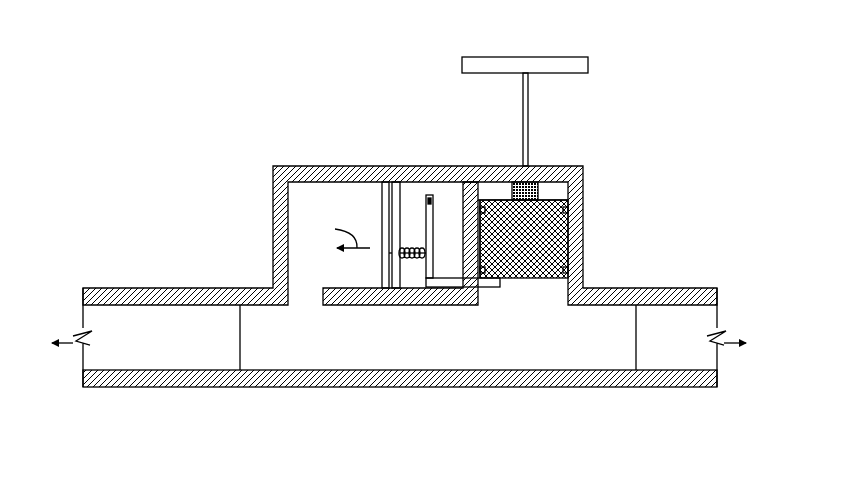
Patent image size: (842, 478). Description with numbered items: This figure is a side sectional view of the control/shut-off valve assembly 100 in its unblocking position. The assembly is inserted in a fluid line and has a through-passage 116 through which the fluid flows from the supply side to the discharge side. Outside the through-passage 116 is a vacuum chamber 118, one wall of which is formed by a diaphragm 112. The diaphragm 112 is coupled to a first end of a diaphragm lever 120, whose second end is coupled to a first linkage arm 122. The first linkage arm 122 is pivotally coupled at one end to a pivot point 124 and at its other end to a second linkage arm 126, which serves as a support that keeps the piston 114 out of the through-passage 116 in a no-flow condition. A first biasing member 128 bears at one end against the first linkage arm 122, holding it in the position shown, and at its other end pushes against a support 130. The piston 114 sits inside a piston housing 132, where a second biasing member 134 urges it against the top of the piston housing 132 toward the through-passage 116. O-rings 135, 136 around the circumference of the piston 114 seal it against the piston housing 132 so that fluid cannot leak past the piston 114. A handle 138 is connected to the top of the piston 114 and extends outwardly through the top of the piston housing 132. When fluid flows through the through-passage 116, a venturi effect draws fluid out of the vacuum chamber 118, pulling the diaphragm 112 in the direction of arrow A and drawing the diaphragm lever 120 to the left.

The control/shut-off valve assembly 100 is at (203, 78).
The diaphragm 112 is at (382, 215).
The piston 114 is at (562, 248).
The through-passage 116 is at (560, 368).
The vacuum chamber 118 is at (272, 237).
The diaphragm lever 120 is at (390, 253).
The first linkage arm 122 is at (428, 199).
The pivot point 124 is at (434, 197).
The second linkage arm 126 is at (490, 288).
The first biasing member 128 is at (412, 260).
The support 130 is at (395, 283).
The piston housing 132 is at (562, 190).
The second biasing member 134 is at (538, 190).
The O-ring 135 is at (568, 209).
The O-ring 136 is at (568, 270).
The handle 138 is at (548, 57).